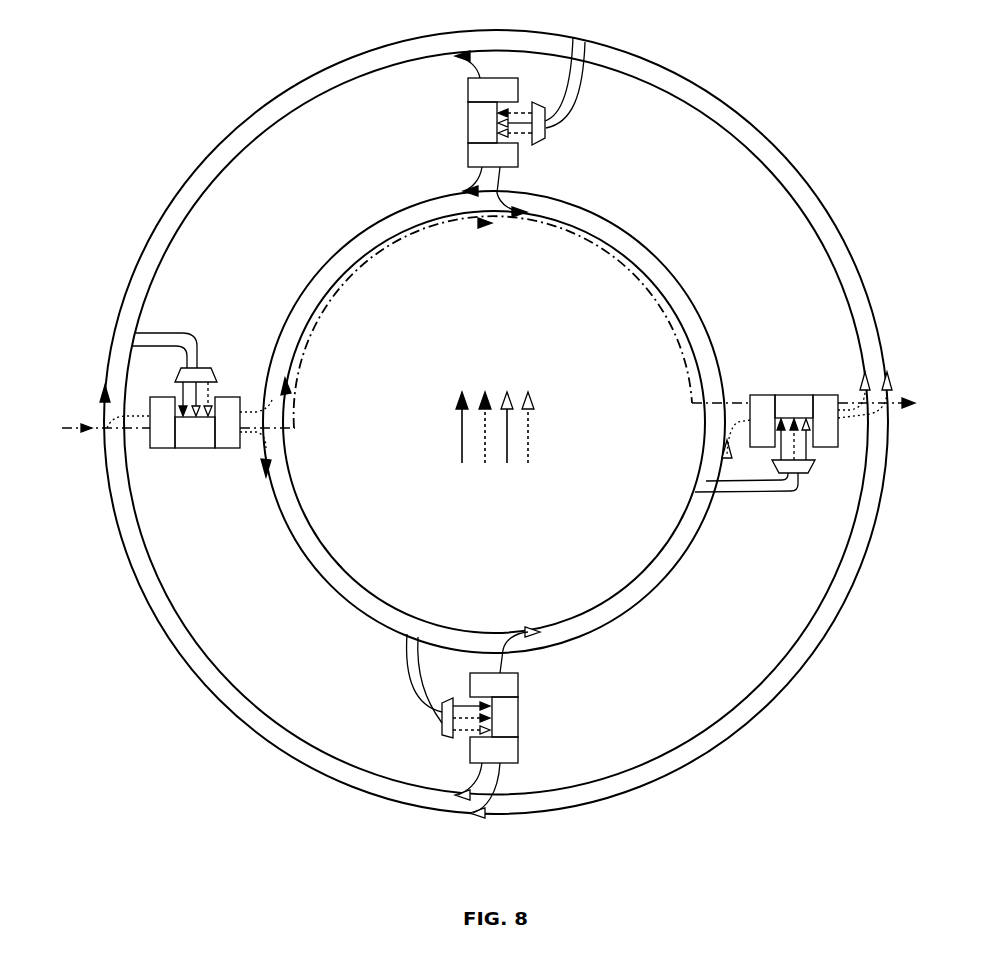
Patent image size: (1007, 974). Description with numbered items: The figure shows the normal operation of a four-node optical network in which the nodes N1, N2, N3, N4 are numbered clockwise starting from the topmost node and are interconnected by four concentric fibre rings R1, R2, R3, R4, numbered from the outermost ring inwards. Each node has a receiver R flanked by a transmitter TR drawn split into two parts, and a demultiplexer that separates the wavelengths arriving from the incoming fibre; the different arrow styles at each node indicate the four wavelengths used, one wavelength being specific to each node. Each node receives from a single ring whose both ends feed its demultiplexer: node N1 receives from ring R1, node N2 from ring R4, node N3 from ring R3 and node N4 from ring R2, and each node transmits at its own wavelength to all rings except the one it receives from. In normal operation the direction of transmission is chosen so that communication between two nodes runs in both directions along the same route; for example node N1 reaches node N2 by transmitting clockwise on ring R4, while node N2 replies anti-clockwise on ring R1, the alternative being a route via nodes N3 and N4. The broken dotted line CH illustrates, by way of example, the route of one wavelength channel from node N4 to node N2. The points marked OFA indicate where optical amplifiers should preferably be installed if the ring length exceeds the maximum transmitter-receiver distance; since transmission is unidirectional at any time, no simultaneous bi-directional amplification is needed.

The fibre ring R1 is at (312, 80).
The fibre ring R2 is at (317, 99).
The fibre ring R3 is at (348, 245).
The fibre ring R4 is at (664, 559).
The node N1 is at (508, 124).
The node N2 is at (791, 430).
The node N3 is at (481, 722).
The node N4 is at (189, 409).
The optical fibre amplifier location OFA is at (499, 200).
The wavelength channel route CH is at (74, 428).